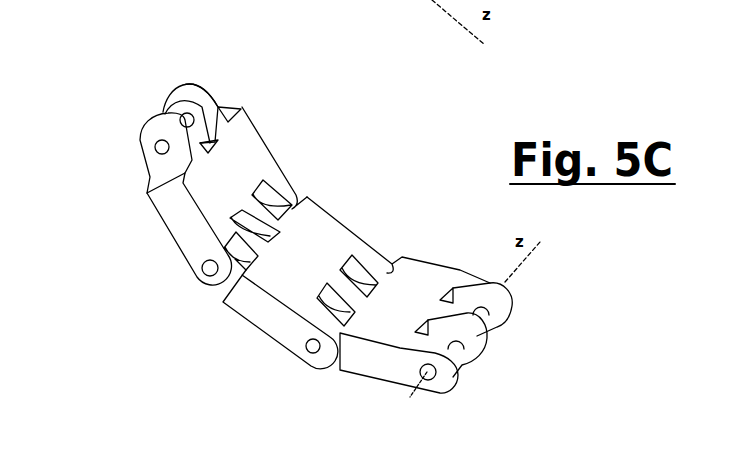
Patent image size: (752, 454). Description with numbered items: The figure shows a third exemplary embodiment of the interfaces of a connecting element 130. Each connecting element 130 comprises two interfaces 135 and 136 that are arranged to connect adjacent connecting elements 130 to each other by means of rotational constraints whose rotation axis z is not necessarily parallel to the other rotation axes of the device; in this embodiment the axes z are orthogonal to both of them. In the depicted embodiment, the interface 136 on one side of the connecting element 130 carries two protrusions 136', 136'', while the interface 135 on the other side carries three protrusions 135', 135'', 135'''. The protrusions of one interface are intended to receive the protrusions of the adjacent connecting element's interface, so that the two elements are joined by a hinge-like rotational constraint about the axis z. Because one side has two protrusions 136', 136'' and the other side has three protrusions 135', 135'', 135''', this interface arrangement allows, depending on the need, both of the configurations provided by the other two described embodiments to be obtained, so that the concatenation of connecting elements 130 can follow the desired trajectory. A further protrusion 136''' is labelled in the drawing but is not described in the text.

The connecting element 130 is at (337, 382).
The interface 135 is at (498, 267).
The protrusion 135' is at (535, 309).
The protrusion 135'' is at (510, 350).
The protrusion 135''' is at (454, 384).
The interface 136 is at (199, 186).
The protrusion 136' is at (187, 76).
The protrusion 136'' is at (115, 130).
The third knuckle of first link 136''' is at (280, 53).